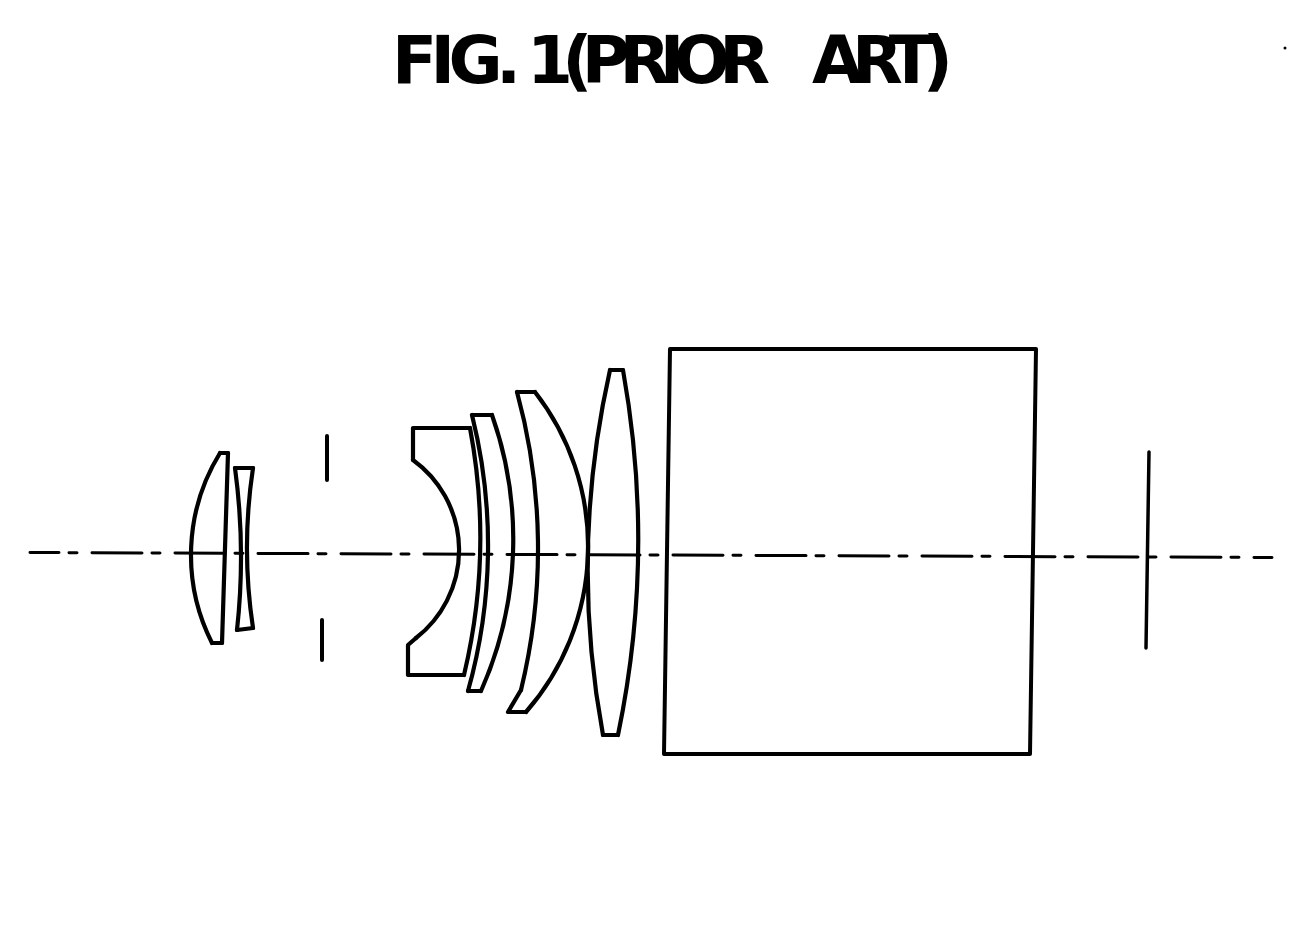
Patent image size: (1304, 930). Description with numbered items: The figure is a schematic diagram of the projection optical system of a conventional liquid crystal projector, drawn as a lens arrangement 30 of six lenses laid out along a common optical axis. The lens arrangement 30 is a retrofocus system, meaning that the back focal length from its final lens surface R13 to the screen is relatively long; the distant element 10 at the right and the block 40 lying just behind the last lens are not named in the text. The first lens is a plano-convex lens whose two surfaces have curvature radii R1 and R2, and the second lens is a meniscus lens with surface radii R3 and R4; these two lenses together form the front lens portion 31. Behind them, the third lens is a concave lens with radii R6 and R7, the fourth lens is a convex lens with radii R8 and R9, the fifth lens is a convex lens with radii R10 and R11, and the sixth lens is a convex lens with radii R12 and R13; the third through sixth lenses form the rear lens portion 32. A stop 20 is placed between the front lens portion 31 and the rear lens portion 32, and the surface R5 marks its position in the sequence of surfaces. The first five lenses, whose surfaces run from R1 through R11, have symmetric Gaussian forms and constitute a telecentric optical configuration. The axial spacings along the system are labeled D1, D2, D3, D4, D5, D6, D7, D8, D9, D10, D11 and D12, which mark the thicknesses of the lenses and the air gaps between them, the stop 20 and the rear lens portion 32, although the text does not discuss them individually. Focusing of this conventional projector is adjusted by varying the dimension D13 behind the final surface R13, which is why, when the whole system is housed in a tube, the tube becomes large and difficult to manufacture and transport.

The image plane 10 is at (1150, 530).
The stop 20 is at (333, 457).
The lens arrangement 30 is at (137, 850).
The front lens portion 31 is at (332, 732).
The rear lens portion 32 is at (680, 800).
The filter / prism block 40 is at (817, 348).
The curvature radius of first lens front surface R1 is at (200, 620).
The curvature radius of first lens rear surface R2 is at (215, 640).
The curvature radius of second lens front surface R3 is at (240, 630).
The curvature radius of second lens rear surface R4 is at (253, 610).
The stop surface R5 is at (322, 632).
The curvature radius of third lens front surface R6 is at (408, 675).
The curvature radius of third lens rear surface R7 is at (433, 677).
The curvature radius of fourth lens front surface R8 is at (466, 686).
The curvature radius of fourth lens rear surface R9 is at (498, 684).
The curvature radius of fifth lens front surface R10 is at (520, 690).
The curvature radius of fifth lens rear surface R11 is at (550, 698).
The curvature radius of sixth lens front surface R12 is at (592, 690).
The curvature radius of final lens surface R13 is at (632, 695).
The first lens thickness D1 is at (213, 480).
The first air gap D2 is at (232, 490).
The second lens thickness D3 is at (240, 485).
The air gap to stop D4 is at (287, 552).
The air gap from stop D5 is at (367, 552).
The third lens thickness D6 is at (413, 428).
The air gap between third and fourth lenses D7 is at (468, 428).
The fourth lens thickness D8 is at (473, 415).
The air gap between fourth and fifth lenses D9 is at (512, 550).
The fifth lens thickness D10 is at (560, 553).
The air gap between fifth and sixth lenses D11 is at (587, 490).
The sixth lens thickness D12 is at (617, 553).
The focusing dimension D13 is at (655, 745).